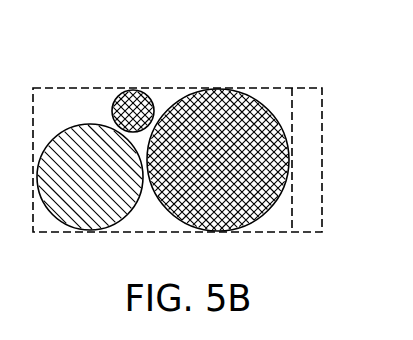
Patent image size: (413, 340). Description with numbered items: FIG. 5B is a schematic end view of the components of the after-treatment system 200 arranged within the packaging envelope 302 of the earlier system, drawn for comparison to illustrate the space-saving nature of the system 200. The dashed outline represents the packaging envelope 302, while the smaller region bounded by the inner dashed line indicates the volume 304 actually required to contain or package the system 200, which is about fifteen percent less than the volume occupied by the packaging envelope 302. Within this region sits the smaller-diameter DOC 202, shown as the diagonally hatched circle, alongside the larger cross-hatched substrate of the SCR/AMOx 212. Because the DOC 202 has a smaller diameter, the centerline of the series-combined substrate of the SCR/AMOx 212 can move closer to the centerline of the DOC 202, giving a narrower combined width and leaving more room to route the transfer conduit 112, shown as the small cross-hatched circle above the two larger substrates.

The after-treatment system 200 is at (275, 73).
The packaging envelope 302 is at (322, 147).
The volume 304 is at (292, 182).
The DOC 202 is at (67, 189).
The transfer conduit 112 is at (152, 103).
The SCR/AMOx 212 is at (233, 170).